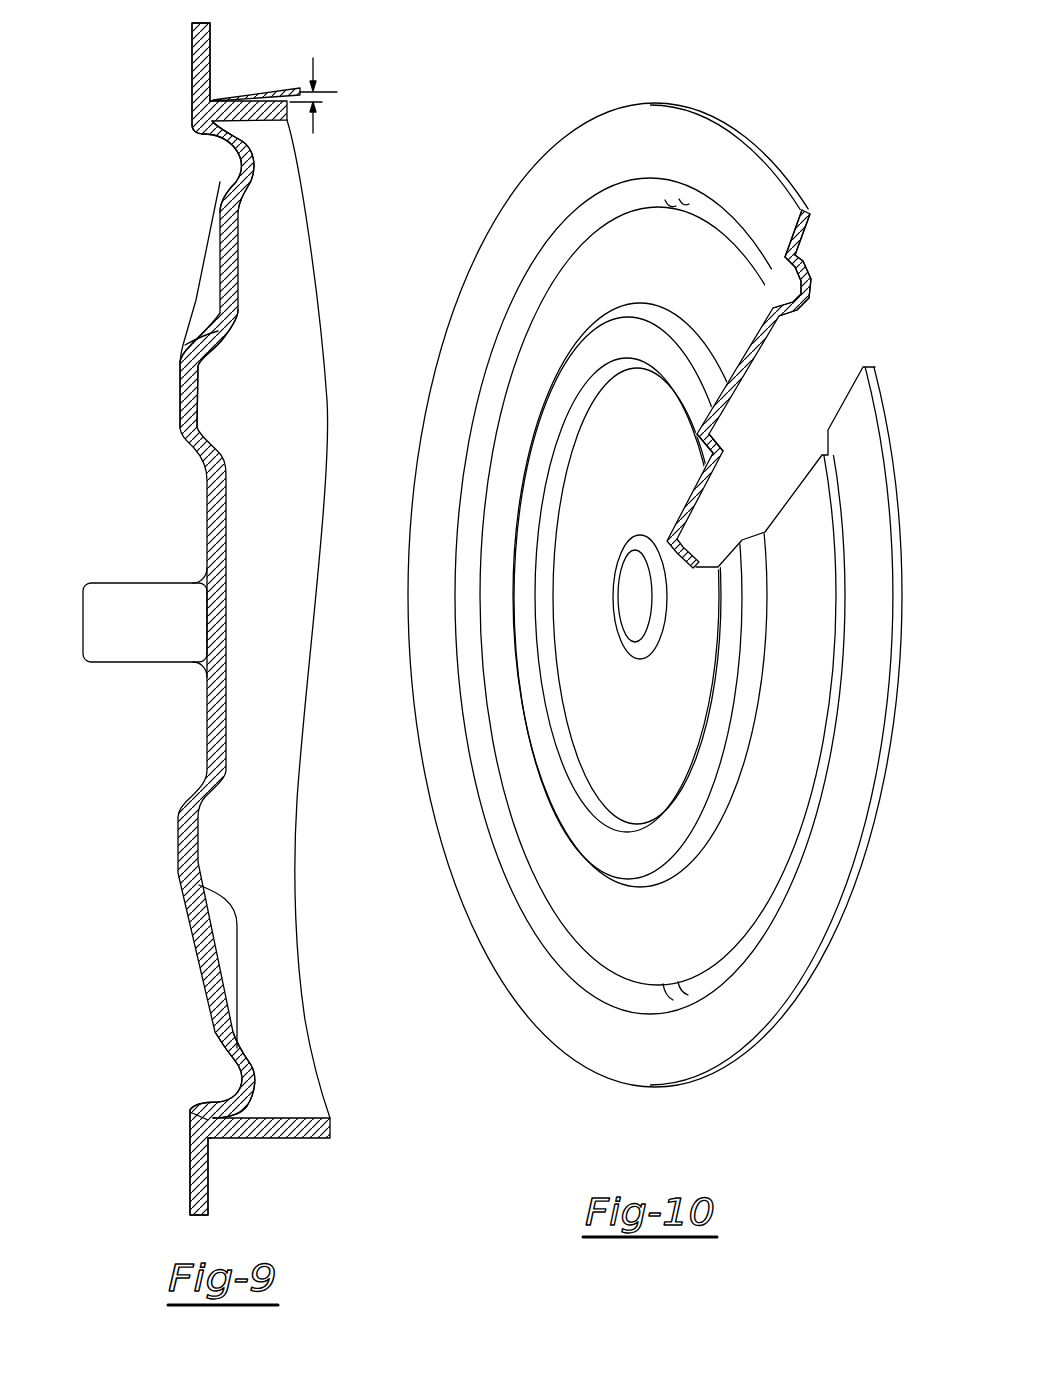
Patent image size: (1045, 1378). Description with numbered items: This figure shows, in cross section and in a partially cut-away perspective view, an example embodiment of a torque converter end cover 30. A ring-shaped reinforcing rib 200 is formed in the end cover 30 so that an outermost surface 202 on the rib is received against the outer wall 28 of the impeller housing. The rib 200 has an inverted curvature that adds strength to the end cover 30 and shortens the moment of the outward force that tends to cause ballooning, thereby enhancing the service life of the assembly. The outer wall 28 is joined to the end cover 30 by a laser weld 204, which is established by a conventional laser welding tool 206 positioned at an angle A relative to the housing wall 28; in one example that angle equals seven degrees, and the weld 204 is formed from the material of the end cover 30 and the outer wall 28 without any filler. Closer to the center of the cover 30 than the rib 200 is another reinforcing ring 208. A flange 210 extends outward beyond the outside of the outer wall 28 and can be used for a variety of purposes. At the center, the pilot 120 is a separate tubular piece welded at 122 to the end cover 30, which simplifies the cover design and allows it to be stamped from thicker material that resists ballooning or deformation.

In FIG. 9, the end cover 30 is at (208, 515).
In FIG. 10, the end cover 30 is at (792, 615).
In FIG. 9, the flange 210 is at (193, 60).
In FIG. 10, the flange 210 is at (801, 240).
In FIG. 9, the reinforcing rib 200 is at (232, 158).
In FIG. 10, the reinforcing rib 200 is at (812, 296).
In FIG. 9, the reinforcing ring 208 is at (180, 400).
In FIG. 10, the reinforcing ring 208 is at (716, 424).
In FIG. 9, the laser weld 204 is at (213, 100).
In FIG. 9, the outermost surface 202 is at (210, 1126).
In FIG. 9, the laser welding tool 206 is at (273, 89).
In FIG. 9, the angle A is at (320, 93).
In FIG. 9, the outer wall 28 is at (270, 121).
In FIG. 9, the pilot 120 is at (83, 622).
In FIG. 9, the weld 122 is at (196, 580).